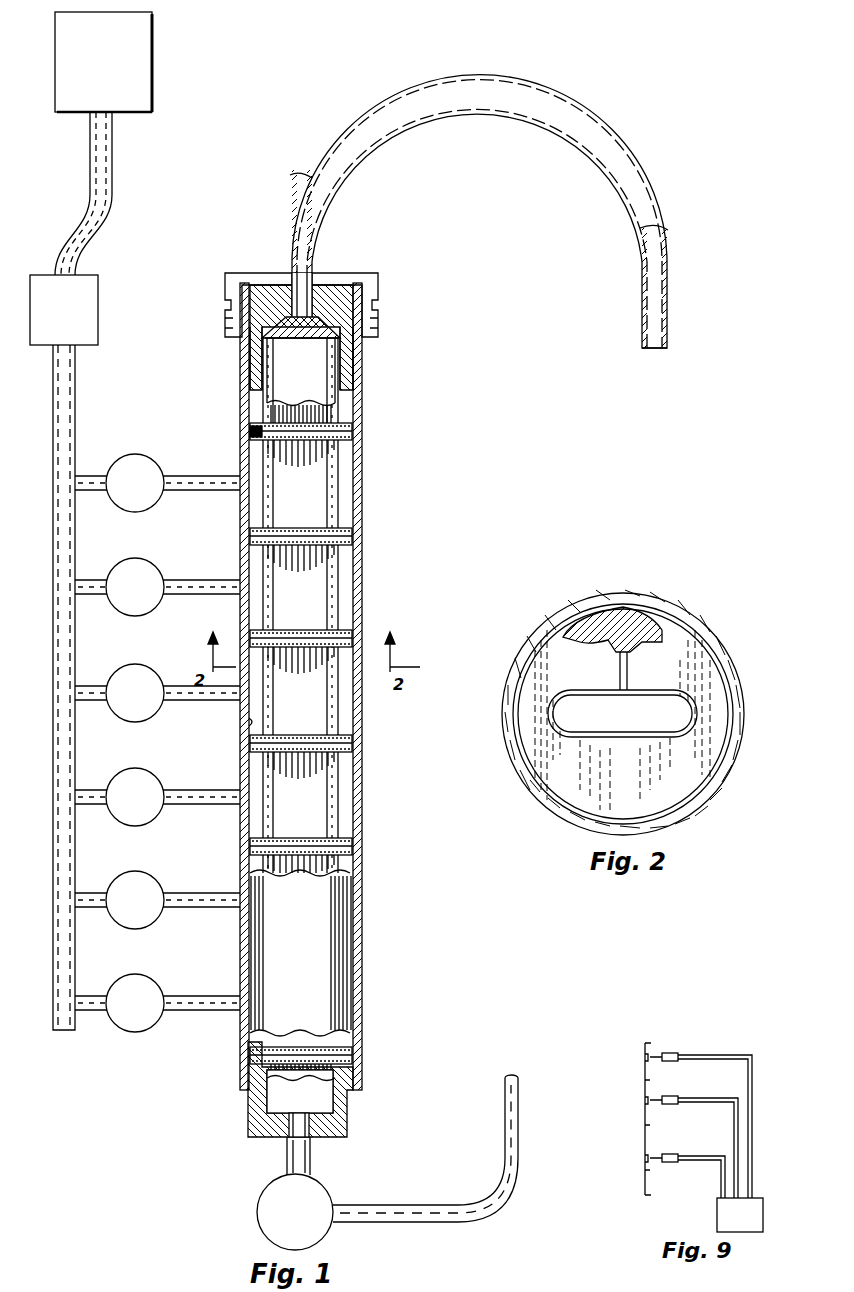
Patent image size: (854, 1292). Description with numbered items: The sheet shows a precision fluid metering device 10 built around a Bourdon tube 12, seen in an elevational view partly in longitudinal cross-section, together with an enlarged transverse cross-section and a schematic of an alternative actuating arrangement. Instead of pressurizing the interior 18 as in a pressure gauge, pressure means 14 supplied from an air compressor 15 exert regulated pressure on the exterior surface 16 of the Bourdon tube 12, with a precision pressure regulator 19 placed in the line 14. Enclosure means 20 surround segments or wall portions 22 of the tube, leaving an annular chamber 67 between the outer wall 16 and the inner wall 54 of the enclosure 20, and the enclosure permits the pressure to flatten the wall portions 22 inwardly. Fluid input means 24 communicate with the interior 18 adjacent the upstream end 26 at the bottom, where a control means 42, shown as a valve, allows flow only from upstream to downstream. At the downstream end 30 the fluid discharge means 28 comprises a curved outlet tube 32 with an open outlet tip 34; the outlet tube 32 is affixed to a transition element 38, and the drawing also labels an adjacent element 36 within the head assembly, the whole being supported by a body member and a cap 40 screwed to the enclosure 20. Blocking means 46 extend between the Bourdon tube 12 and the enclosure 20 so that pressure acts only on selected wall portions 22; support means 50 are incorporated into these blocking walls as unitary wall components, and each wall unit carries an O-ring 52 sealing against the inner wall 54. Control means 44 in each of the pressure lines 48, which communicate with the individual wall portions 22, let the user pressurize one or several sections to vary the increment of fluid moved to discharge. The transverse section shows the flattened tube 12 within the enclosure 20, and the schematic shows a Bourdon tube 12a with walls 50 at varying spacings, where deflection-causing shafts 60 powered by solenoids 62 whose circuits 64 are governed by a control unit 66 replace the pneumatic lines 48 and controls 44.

In FIG. 1, the precision fluid metering device 10 is at (374, 443).
In FIG. 1, the Bourdon tube 12 is at (350, 490).
In FIG. 2, the Bourdon tube 12 is at (696, 692).
In FIG. 9, the inner tube 12a is at (634, 1144).
In FIG. 1, the pressure means 14 is at (80, 404).
In FIG. 1, the air compressor 15 is at (140, 64).
In FIG. 1, the exterior surface 16 is at (337, 578).
In FIG. 2, the exterior surface 16 is at (608, 692).
In FIG. 1, the interior 18 is at (270, 378).
In FIG. 2, the interior 18 is at (680, 713).
In FIG. 1, the precision pressure regulator 19 is at (86, 308).
In FIG. 1, the enclosure means 20 is at (357, 600).
In FIG. 2, the enclosure means 20 is at (645, 606).
In FIG. 1, the wall portions 22 is at (323, 568).
In FIG. 2, the wall portions 22 is at (663, 692).
In FIG. 9, the wall portions 22 is at (640, 1172).
In FIG. 1, the fluid input means 24 is at (370, 1197).
In FIG. 1, the upstream end 26 is at (350, 1104).
In FIG. 1, the fluid discharge means 28 is at (384, 124).
In FIG. 1, the downstream end 30 is at (350, 368).
In FIG. 1, the curved outlet tube 32 is at (668, 266).
In FIG. 1, the open outlet tip 34 is at (664, 348).
In FIG. 1, the stopper 36 is at (318, 332).
In FIG. 1, the transition element 38 is at (324, 290).
In FIG. 1, the cap 40 is at (378, 279).
In FIG. 1, the control means 42 is at (263, 1216).
In FIG. 1, the control means 44 is at (146, 979).
In FIG. 1, the blocking means 46 is at (340, 737).
In FIG. 2, the blocking means 46 is at (700, 662).
In FIG. 1, the pressure lines 48 is at (180, 998).
In FIG. 1, the support means 50 is at (340, 737).
In FIG. 2, the support means 50 is at (660, 721).
In FIG. 9, the support means 50 is at (640, 1190).
In FIG. 1, the O-ring 52 is at (250, 433).
In FIG. 2, the O-ring 52 is at (655, 618).
In FIG. 1, the inner wall 54 is at (249, 720).
In FIG. 9, the deflection-causing shafts 60 is at (662, 1052).
In FIG. 9, the solenoids 62 is at (680, 1156).
In FIG. 9, the circuits 64 is at (742, 1054).
In FIG. 9, the control unit 66 is at (763, 1214).
In FIG. 1, the annular chamber 67 is at (356, 792).